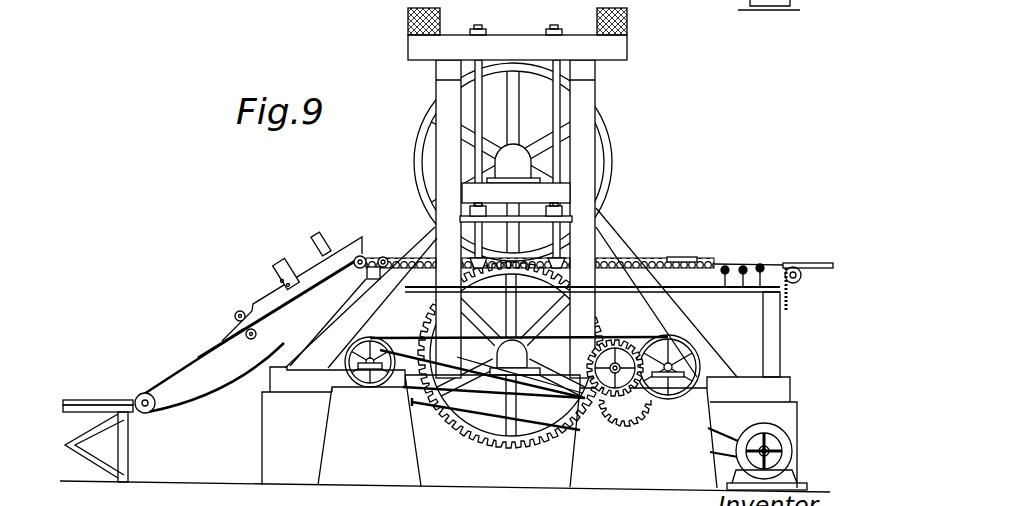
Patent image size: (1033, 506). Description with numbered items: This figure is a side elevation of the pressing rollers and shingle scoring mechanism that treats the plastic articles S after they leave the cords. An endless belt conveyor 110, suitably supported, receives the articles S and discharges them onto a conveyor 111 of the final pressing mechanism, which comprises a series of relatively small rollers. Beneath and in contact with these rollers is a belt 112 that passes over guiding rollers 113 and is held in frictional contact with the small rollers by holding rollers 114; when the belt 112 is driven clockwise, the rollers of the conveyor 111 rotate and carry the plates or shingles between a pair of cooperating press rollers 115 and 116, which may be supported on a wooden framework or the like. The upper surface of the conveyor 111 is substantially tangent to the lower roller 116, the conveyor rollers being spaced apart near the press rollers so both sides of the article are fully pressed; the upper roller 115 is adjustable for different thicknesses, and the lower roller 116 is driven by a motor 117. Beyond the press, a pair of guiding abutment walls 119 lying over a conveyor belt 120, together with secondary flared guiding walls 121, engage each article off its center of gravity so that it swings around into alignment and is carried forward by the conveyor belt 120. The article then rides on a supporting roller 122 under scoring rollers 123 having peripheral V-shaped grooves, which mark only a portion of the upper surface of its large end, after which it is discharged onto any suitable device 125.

The endless belt conveyor 110 is at (810, 263).
The conveyor 111 is at (744, 264).
The belt 112 is at (758, 275).
The guiding rollers 113 is at (770, 292).
The holding rollers 114 is at (743, 275).
The press roller 115 is at (612, 166).
The press roller 116 is at (533, 262).
The motor 117 is at (776, 431).
The guiding abutment walls 119 is at (342, 247).
The conveyor belt 120 is at (202, 361).
The secondary flared guiding walls 121 is at (302, 277).
The roller 122 is at (256, 333).
The scoring rollers 123 is at (240, 311).
The device 125 is at (93, 401).
The articles S is at (680, 258).